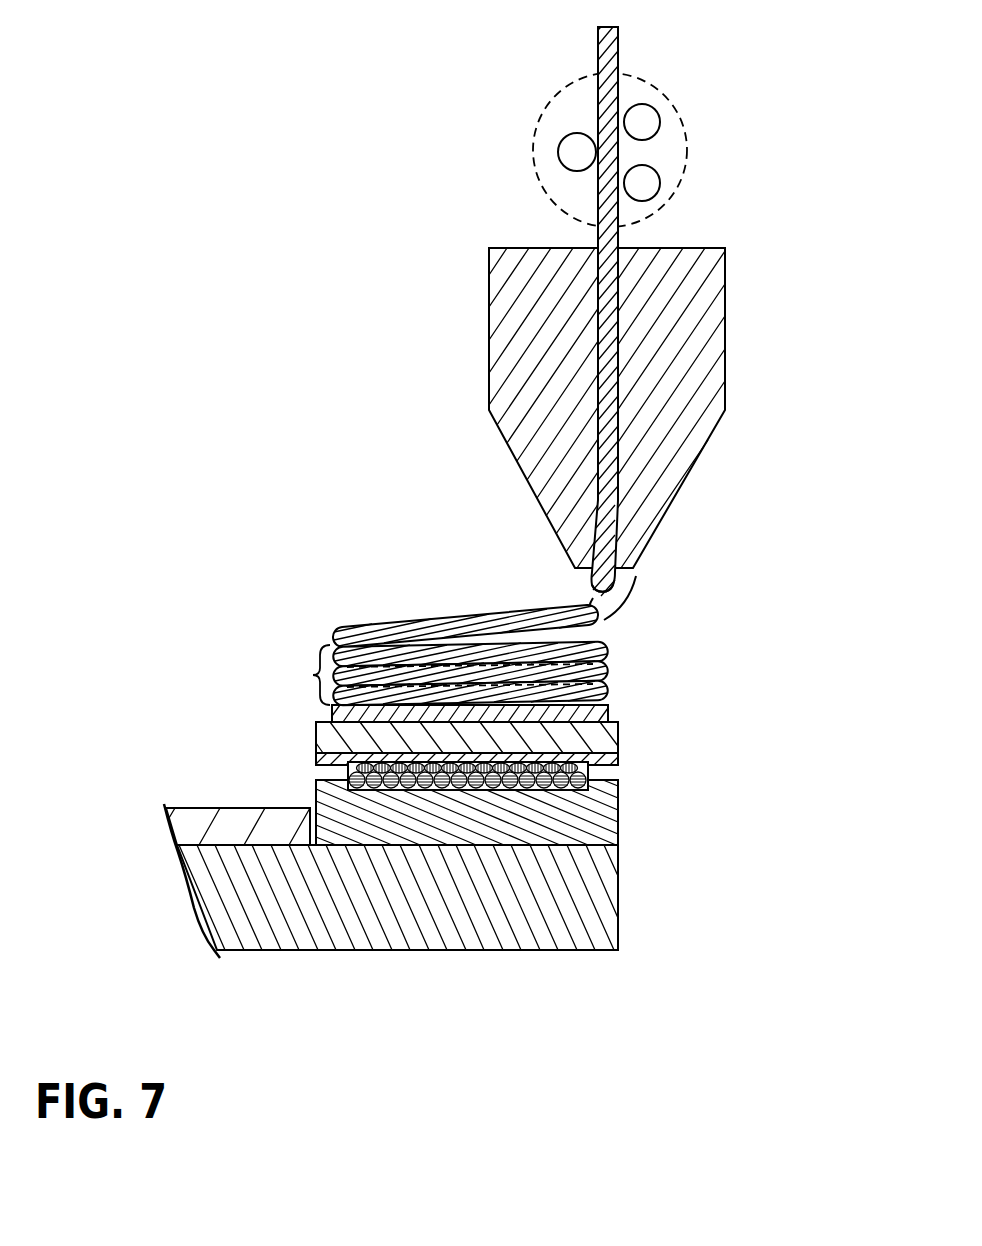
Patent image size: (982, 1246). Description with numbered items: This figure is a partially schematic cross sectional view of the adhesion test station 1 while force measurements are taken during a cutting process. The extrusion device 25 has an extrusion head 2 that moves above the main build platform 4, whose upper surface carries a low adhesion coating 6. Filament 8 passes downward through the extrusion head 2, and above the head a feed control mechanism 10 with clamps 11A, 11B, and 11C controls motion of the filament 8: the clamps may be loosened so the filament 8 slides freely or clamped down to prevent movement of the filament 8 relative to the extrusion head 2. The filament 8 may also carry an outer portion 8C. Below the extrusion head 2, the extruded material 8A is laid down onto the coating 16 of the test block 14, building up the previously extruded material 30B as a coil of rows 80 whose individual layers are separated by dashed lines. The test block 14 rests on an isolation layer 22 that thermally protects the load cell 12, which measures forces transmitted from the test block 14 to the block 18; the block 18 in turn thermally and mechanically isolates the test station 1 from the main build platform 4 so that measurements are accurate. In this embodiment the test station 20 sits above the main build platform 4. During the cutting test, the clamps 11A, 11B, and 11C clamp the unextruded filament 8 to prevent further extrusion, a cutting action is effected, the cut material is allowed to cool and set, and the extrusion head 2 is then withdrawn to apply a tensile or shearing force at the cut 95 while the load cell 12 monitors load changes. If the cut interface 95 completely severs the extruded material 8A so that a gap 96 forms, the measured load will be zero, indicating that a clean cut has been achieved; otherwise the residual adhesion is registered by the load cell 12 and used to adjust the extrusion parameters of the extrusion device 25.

The test station 1 is at (653, 634).
The extrusion head 2 is at (487, 355).
The build platform 4 is at (621, 890).
The low adhesion coating 6 is at (204, 804).
The filament 8 is at (596, 48).
The extruded material 8A is at (612, 582).
The wire coating 8C is at (624, 220).
The feed control mechanism 10 is at (544, 201).
The clamp 11A is at (570, 150).
The clamp 11B is at (650, 117).
The clamp 11C is at (645, 183).
The load cell 12 is at (346, 776).
The test block 14 is at (312, 737).
The coating 16 is at (616, 709).
The block 18 is at (621, 813).
The test station 20 is at (331, 607).
The isolation layer 22 is at (623, 759).
The extrusion device 25 is at (218, 233).
The previously extruded material 30B is at (294, 675).
The coil 80 is at (473, 620).
The cut 95 is at (556, 594).
The gap 96 is at (582, 597).